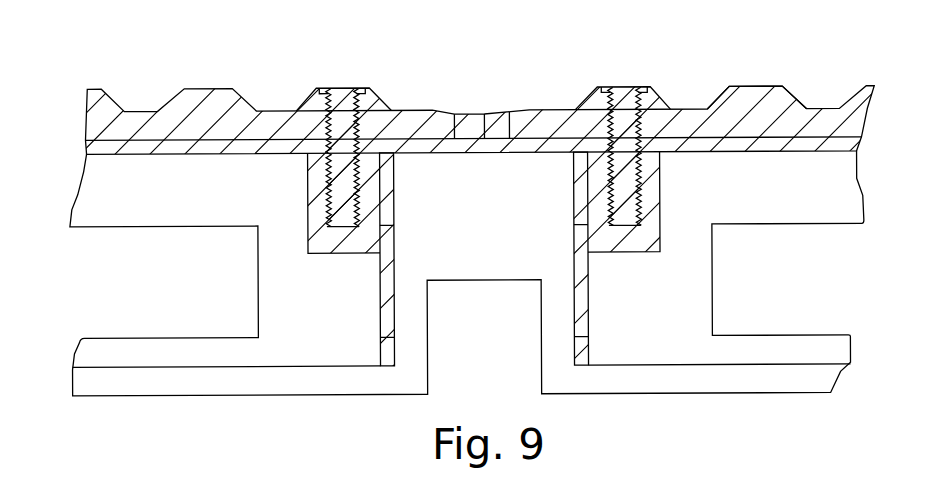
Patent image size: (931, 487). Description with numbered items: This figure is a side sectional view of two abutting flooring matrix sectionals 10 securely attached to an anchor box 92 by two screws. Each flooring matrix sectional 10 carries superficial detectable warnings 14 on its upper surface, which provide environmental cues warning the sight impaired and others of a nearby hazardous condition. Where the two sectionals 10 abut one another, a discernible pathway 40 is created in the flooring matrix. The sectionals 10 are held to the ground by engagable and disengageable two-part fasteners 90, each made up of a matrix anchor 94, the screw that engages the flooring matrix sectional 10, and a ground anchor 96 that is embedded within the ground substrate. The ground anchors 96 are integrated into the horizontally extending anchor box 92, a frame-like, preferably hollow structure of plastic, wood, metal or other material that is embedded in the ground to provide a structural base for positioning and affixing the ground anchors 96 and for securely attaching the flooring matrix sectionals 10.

The flooring matrix sectional 10 is at (810, 122).
The detectable warnings 14 is at (737, 86).
The discernible pathway 40 is at (492, 113).
The fastener 90 is at (308, 203).
The anchor box 92 is at (318, 395).
The matrix anchor 94 is at (345, 147).
The ground anchor 96 is at (367, 200).